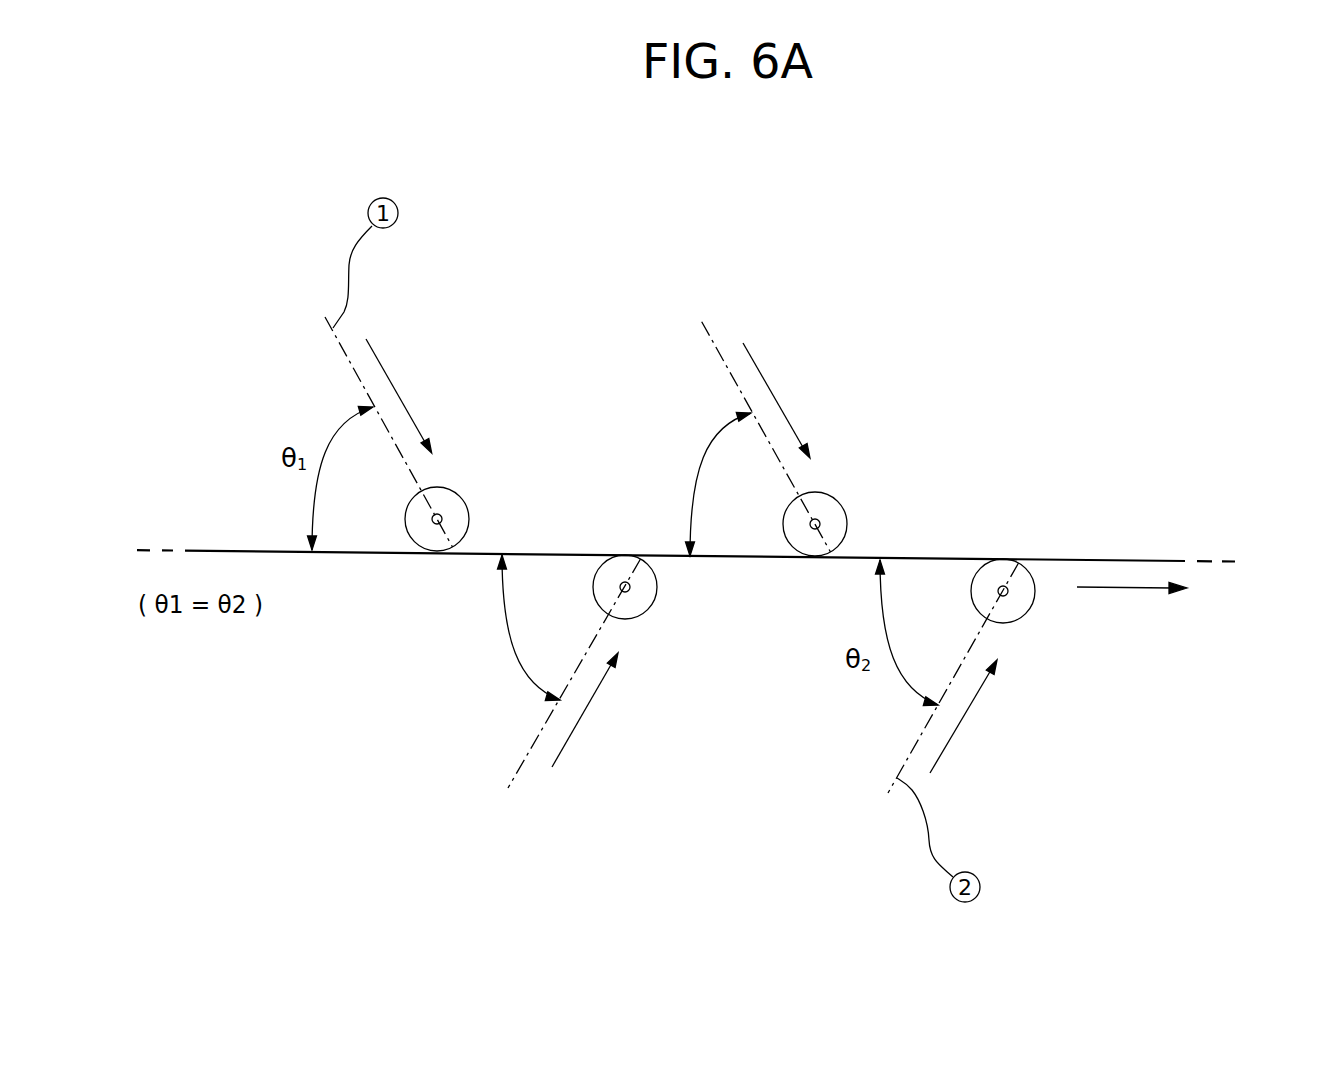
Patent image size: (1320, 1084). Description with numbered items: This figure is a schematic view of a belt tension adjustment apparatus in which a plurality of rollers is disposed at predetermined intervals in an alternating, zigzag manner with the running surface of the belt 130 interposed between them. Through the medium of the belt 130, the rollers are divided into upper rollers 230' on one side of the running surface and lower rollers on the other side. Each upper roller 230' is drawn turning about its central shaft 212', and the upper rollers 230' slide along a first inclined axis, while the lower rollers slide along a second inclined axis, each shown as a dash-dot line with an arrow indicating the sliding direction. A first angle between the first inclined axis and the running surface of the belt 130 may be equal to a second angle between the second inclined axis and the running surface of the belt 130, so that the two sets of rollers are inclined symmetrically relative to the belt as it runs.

The belt 130 is at (1117, 560).
The first rotating shaft 212' is at (616, 375).
The upper roller 230' is at (722, 377).